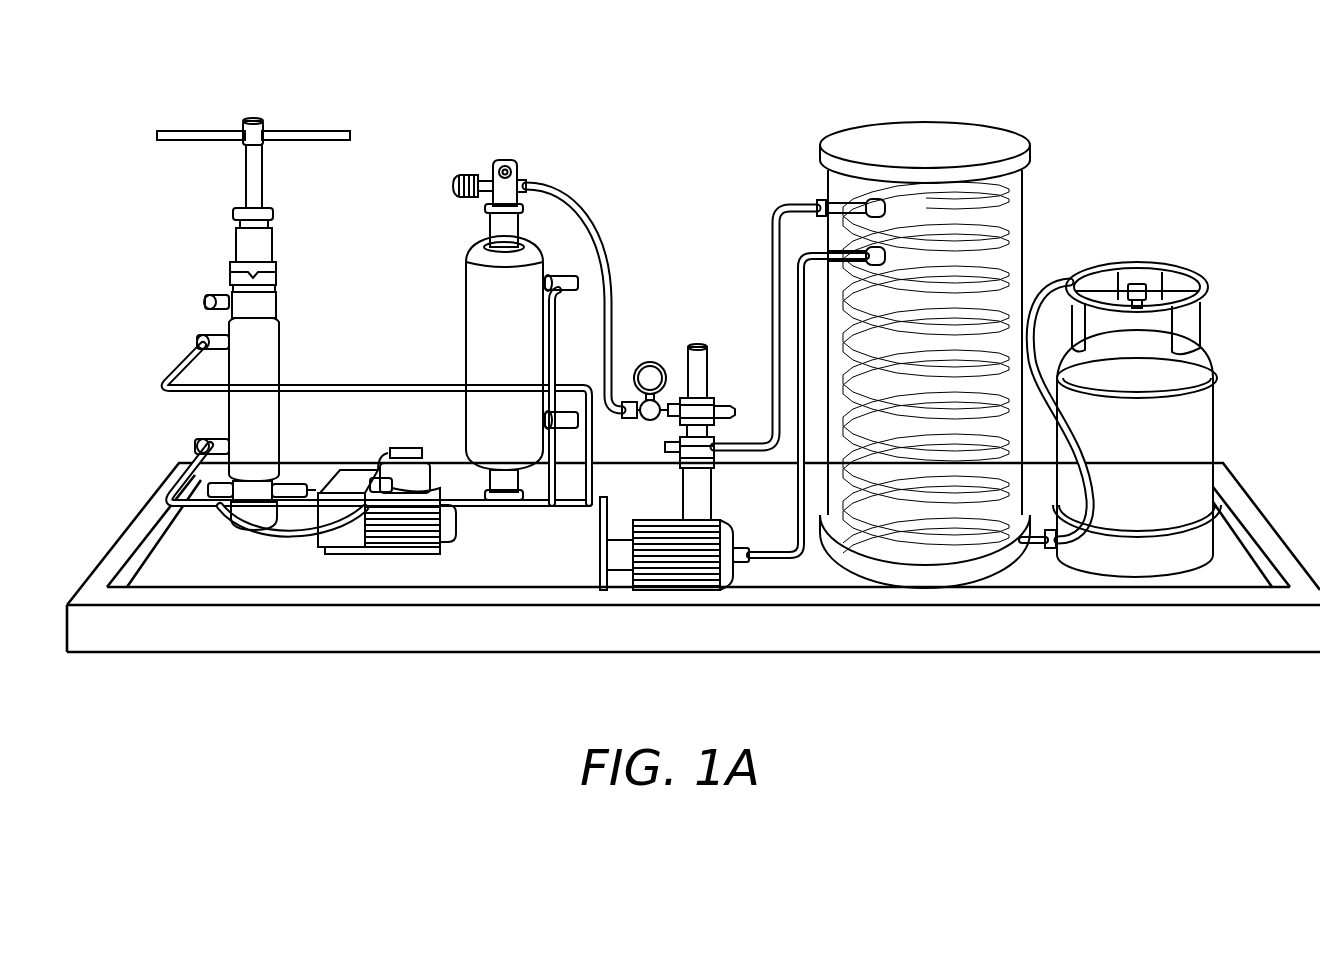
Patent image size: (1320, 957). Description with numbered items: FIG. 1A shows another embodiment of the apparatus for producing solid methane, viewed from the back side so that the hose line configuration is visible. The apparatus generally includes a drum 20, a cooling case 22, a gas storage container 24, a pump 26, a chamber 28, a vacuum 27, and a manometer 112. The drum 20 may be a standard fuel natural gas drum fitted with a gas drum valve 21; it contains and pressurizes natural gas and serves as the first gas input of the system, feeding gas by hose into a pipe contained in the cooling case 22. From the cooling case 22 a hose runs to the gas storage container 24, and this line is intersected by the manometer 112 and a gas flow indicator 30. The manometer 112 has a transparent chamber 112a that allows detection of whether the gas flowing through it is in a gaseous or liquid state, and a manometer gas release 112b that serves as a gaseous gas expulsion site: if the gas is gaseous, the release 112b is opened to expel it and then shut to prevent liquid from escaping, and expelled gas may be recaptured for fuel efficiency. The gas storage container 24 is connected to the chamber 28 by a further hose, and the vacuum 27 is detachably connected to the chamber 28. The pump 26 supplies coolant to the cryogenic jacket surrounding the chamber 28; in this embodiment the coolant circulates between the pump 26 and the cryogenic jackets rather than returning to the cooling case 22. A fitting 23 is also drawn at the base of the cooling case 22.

The drum 20 is at (1143, 381).
The gas drum valve 21 is at (1136, 282).
The cooling case 22 is at (952, 100).
The fitting 23 is at (1050, 552).
The gas storage container 24 is at (510, 135).
The pump 26 is at (681, 598).
The vacuum 27 is at (387, 568).
The chamber 28 is at (264, 104).
The gas flow indicator 30 is at (649, 360).
The manometer 112 is at (727, 389).
The transparent chamber 112a is at (706, 484).
The manometer gas release 112b is at (705, 372).